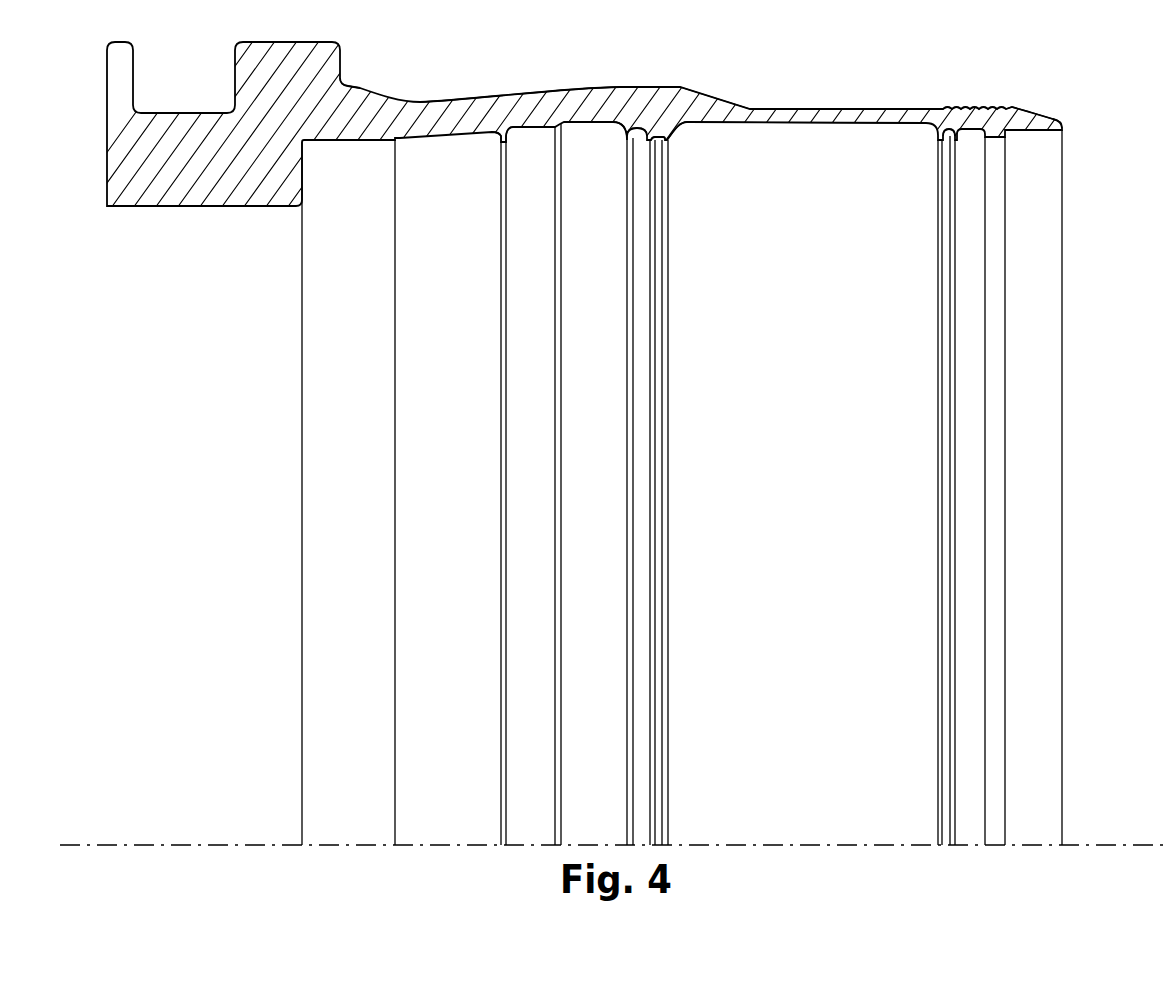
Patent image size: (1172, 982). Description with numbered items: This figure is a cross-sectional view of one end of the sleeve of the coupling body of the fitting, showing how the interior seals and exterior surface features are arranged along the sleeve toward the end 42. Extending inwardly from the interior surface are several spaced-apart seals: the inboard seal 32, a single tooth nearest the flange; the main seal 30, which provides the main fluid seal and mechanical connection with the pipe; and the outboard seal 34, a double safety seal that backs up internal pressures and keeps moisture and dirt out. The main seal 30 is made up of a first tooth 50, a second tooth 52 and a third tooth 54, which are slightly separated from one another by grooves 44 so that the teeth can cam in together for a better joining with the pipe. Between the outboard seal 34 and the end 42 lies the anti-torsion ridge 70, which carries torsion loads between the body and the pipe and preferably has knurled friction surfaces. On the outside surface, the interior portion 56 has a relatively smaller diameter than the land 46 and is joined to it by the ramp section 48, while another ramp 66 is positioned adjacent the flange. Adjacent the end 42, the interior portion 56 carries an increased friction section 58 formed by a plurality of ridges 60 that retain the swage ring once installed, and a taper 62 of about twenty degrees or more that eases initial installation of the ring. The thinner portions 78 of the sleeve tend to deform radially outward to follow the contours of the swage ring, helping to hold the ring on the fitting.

The main seal 30 is at (623, 194).
The inboard seal 32 is at (503, 146).
The outboard seal 34 is at (948, 171).
The end 42 is at (1054, 114).
The grooves 44 is at (658, 134).
The land 46 is at (621, 85).
The ramp section 48 is at (705, 97).
The first tooth 50 is at (629, 137).
The second tooth 52 is at (650, 141).
The third tooth 54 is at (667, 138).
The interior portion 56 is at (788, 108).
The increased friction section 58 is at (996, 107).
The ridges 60 is at (968, 108).
The taper 62 is at (1066, 121).
The ramp 66 is at (347, 87).
The anti-torsion ridge 70 is at (992, 153).
The thinner portions 78 is at (815, 114).